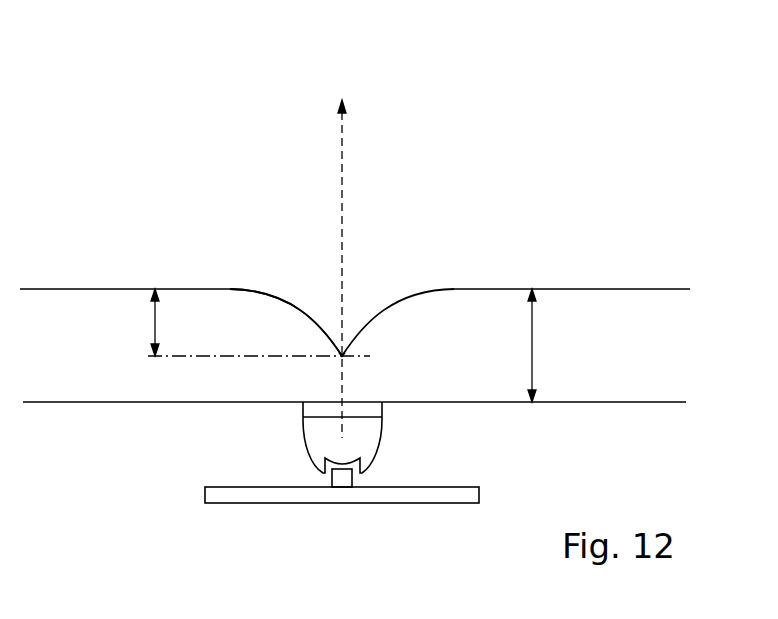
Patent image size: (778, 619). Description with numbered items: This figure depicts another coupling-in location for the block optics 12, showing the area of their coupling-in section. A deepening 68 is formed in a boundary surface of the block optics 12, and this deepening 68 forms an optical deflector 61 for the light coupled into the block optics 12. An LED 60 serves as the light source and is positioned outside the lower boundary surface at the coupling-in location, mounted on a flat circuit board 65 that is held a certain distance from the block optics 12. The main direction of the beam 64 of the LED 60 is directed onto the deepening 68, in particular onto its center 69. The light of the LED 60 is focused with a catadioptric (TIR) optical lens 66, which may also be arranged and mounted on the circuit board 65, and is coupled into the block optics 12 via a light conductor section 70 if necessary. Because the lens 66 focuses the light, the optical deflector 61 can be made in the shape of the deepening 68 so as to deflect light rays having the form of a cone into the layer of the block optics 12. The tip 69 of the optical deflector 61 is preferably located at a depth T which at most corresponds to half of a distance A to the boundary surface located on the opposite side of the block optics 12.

The block optics 12 is at (622, 305).
The optical deflector 61 is at (372, 297).
The deepening 68 is at (333, 318).
The center of the deepening 69 is at (340, 355).
The main direction of the beam 64 is at (342, 160).
The light conductor section 70 is at (303, 411).
The catadioptric (TIR) optical lens 66 is at (330, 437).
The LED 60 is at (345, 484).
The flat circuit board 65 is at (452, 494).
The depth T is at (153, 322).
The distance A is at (532, 347).